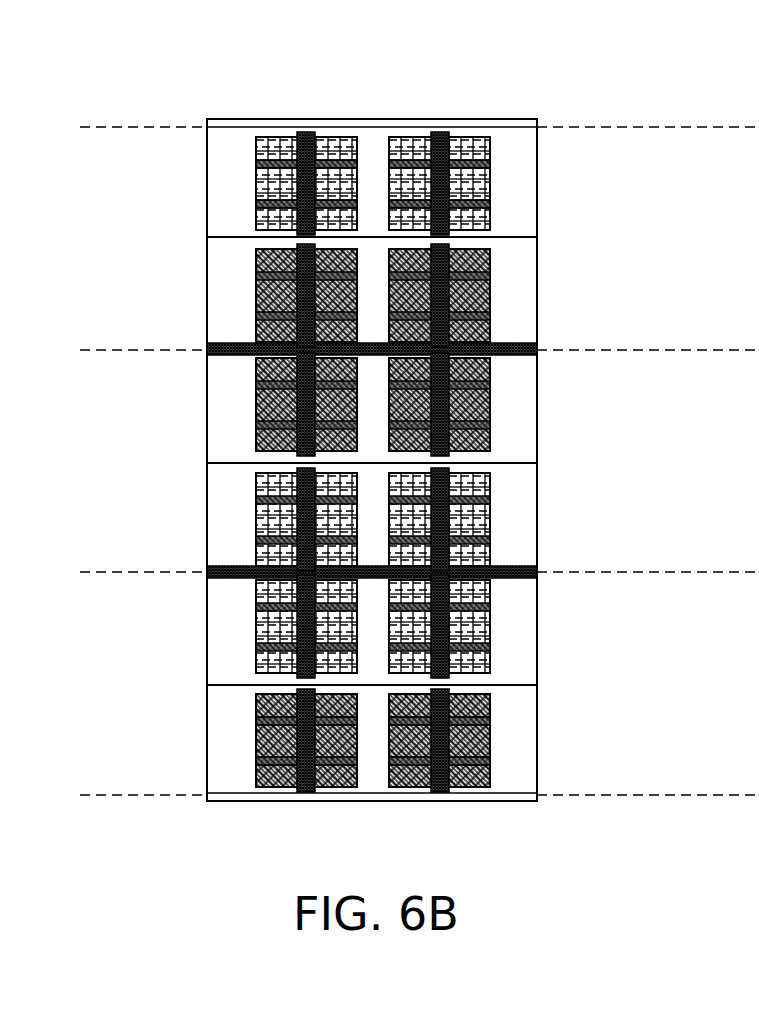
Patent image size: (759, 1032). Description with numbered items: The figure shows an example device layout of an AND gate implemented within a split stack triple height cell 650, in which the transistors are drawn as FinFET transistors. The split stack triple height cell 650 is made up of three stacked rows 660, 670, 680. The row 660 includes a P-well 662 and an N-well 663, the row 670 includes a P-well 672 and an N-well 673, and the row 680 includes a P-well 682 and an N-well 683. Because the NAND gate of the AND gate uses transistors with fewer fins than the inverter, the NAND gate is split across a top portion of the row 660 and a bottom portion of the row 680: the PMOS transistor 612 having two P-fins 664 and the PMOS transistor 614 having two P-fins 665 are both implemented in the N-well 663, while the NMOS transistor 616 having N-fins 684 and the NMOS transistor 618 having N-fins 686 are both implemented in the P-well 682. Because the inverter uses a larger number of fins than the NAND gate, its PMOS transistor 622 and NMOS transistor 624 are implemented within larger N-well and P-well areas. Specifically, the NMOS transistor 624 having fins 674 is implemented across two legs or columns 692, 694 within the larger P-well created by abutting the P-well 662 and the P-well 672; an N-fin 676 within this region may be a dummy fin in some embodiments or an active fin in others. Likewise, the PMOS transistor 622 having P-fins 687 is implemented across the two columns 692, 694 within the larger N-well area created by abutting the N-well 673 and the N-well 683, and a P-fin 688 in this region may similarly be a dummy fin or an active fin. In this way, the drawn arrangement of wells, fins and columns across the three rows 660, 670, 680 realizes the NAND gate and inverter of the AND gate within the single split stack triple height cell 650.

The split stack triple height cell 650 is at (485, 100).
The row 660 is at (655, 127).
The row 670 is at (655, 350).
The row 680 is at (655, 572).
The N-well 663 is at (238, 146).
The P-fins 664 is at (256, 206).
The P-fins 665 is at (488, 160).
The PMOS transistor 612 is at (262, 212).
The PMOS transistor 614 is at (485, 212).
The P-well 662 is at (238, 284).
The fins 674 is at (358, 272).
The N-fin 676 is at (485, 357).
The P-well 672 is at (238, 386).
The NMOS transistor 624 is at (386, 366).
The N-well 673 is at (238, 515).
The P-fin 688 is at (485, 565).
The N-well 683 is at (238, 598).
The PMOS transistor 622 is at (410, 633).
The P-fins 687 is at (358, 650).
The P-well 682 is at (238, 703).
The N-fins 684 is at (256, 720).
The N-fins 686 is at (488, 720).
The NMOS transistor 616 is at (262, 774).
The NMOS transistor 618 is at (485, 774).
The column 692 is at (240, 803).
The column 694 is at (378, 803).